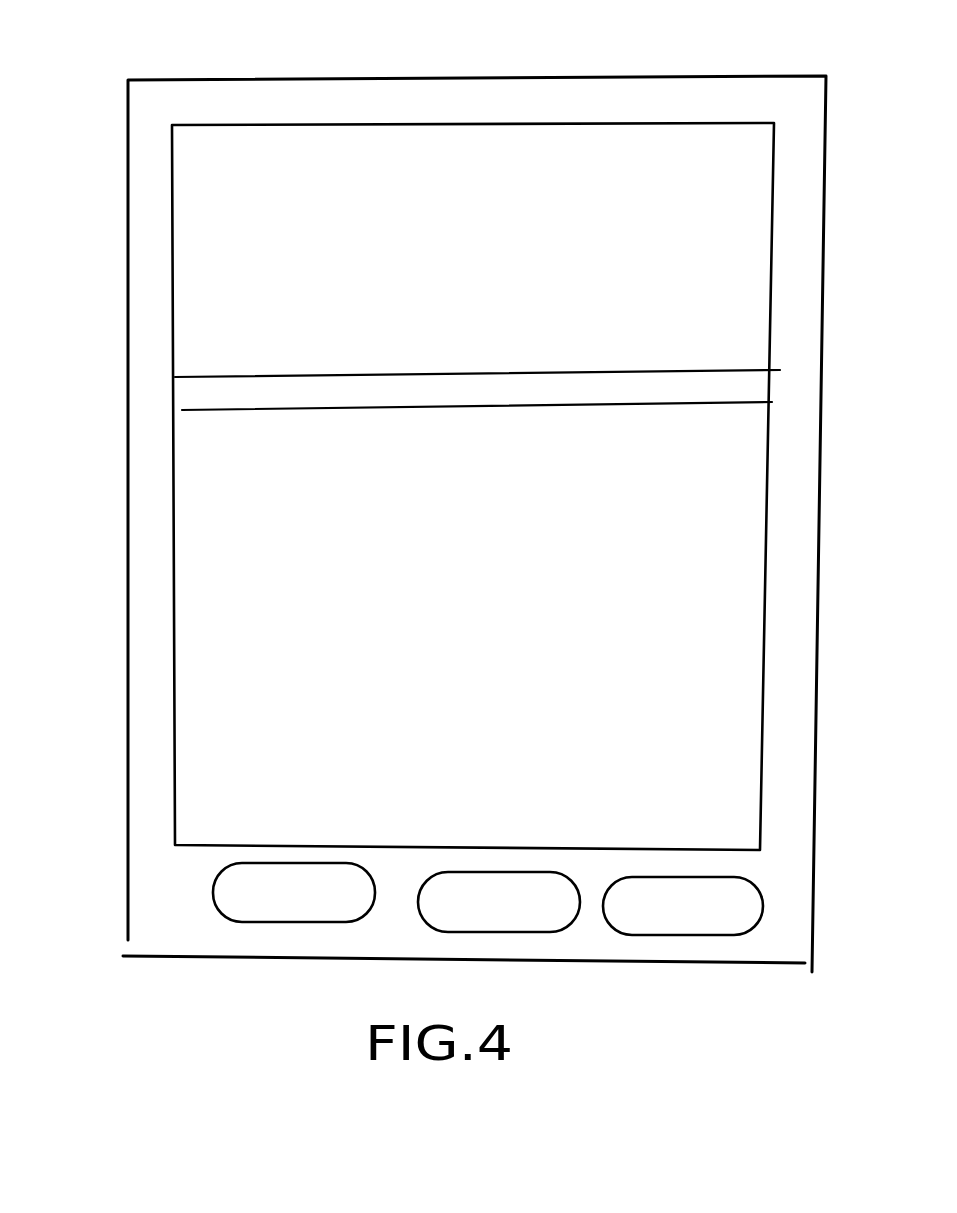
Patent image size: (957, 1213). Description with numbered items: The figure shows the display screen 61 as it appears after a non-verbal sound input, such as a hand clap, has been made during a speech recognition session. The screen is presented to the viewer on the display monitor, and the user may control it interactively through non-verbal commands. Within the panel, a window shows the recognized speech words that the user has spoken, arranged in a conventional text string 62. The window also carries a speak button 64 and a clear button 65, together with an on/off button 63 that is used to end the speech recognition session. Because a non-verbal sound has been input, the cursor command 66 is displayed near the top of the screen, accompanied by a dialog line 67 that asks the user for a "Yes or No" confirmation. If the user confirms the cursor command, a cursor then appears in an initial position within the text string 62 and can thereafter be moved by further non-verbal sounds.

The display screen 61 is at (796, 240).
The text string 62 is at (222, 492).
The on/off button 63 is at (256, 907).
The speak button 64 is at (548, 917).
The clear button 65 is at (715, 920).
The cursor command 66 is at (321, 162).
The dialog line 67 is at (525, 290).